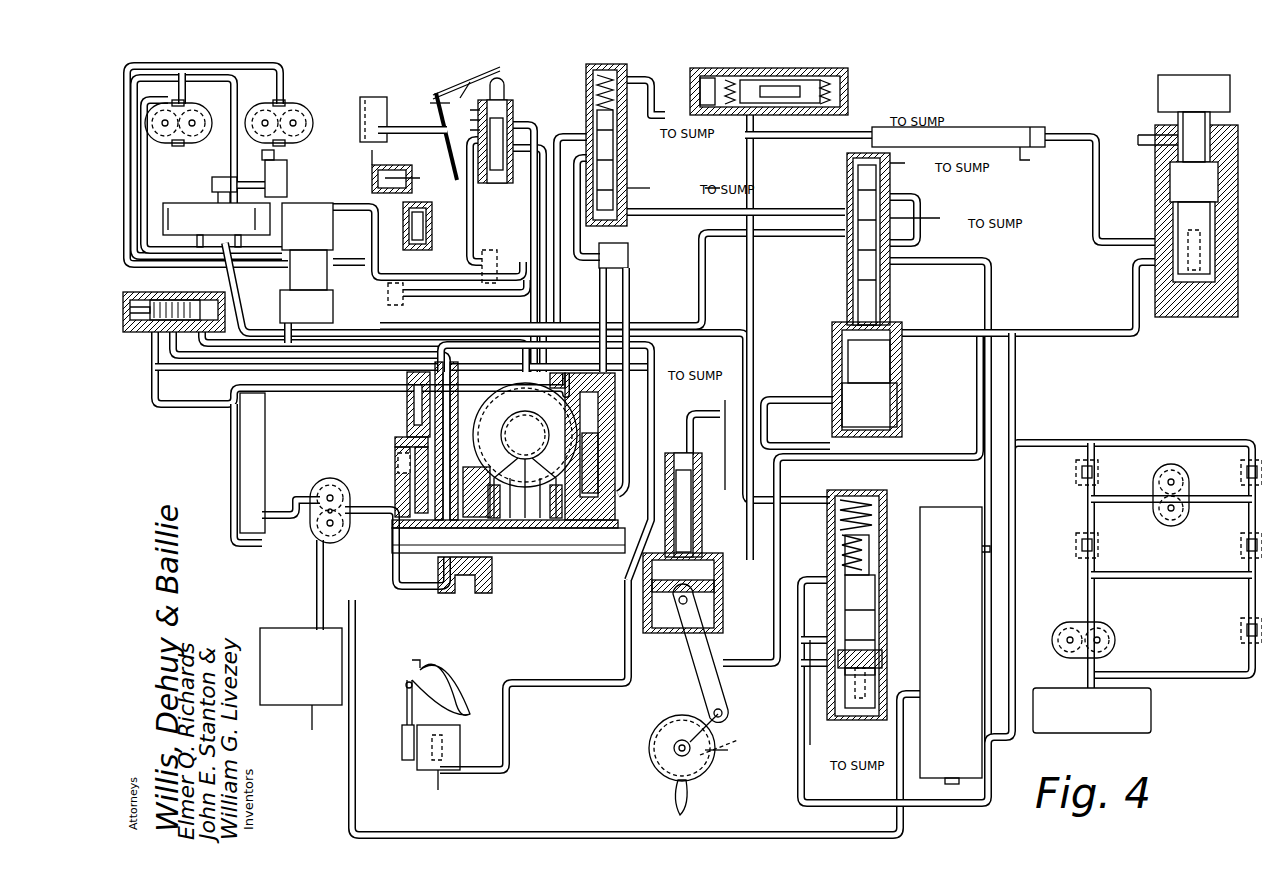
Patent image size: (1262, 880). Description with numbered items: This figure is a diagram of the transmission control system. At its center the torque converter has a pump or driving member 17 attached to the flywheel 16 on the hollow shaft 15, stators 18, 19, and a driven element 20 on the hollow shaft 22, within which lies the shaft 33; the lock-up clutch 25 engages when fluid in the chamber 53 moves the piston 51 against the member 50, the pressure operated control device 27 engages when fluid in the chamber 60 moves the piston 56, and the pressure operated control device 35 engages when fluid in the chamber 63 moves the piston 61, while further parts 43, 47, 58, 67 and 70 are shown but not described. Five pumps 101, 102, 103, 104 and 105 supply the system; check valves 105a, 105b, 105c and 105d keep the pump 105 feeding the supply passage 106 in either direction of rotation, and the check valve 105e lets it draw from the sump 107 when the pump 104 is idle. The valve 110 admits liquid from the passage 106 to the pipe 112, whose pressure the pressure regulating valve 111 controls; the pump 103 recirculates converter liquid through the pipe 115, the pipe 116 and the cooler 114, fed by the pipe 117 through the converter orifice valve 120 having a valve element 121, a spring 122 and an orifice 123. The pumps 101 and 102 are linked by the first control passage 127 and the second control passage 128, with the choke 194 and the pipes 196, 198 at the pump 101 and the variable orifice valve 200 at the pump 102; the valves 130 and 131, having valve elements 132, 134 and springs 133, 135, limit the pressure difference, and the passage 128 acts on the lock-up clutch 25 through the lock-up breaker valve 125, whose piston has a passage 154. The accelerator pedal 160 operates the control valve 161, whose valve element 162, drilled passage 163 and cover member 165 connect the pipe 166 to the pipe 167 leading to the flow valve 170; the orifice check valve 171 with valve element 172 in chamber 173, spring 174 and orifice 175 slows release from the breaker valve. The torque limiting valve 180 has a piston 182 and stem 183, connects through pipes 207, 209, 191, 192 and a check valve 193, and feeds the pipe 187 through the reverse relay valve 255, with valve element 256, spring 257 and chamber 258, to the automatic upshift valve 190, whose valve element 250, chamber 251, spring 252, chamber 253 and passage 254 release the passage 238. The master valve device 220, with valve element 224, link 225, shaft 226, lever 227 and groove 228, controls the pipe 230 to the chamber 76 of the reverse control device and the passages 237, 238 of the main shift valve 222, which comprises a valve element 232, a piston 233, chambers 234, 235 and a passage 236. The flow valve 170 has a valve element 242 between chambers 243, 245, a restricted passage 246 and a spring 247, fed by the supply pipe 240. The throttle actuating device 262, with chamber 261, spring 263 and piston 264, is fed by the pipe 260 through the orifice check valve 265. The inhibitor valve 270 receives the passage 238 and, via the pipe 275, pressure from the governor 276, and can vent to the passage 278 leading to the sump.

The hollow shaft 15 is at (651, 500).
The flywheel 16 is at (615, 376).
The pump or driving member 17 is at (518, 383).
The stator 18 is at (506, 476).
The stator 19 is at (543, 476).
The output or driven element 20 is at (525, 435).
The hollow shaft 22 is at (600, 553).
The lock-up clutch 25 is at (582, 445).
The pressure operated control device 27 is at (410, 435).
The shaft 33 is at (515, 550).
The pressure operated control device 35 is at (410, 372).
The cam lever 43 is at (440, 690).
The link 47 is at (470, 718).
The member 50 is at (550, 378).
The piston 51 is at (615, 395).
The chamber 53 is at (615, 410).
The piston 56 is at (472, 425).
The ring 58 is at (465, 412).
The chamber 60 is at (463, 468).
The piston 61 is at (458, 375).
The chamber 63 is at (458, 395).
The rod 67 is at (405, 700).
The servo 70 is at (402, 745).
The chamber 76 is at (455, 750).
The pump 101 is at (190, 130).
The pump 102 is at (290, 103).
The pump 103 is at (330, 495).
The pump 104 is at (1115, 636).
The pump 105 is at (1183, 478).
The check valve 105a is at (1065, 475).
The check valve 105b is at (1066, 547).
The check valve 105c is at (1230, 476).
The check valve 105d is at (1227, 546).
The check valve 105e is at (1226, 630).
The supply passage 106 is at (1080, 325).
The sump 107 is at (1140, 712).
The valve 110 is at (935, 505).
The pressure regulating valve 111 is at (300, 628).
The pipe 112 is at (350, 802).
The cooler 114 is at (262, 440).
The pipe 115 is at (348, 505).
The pipe 116 is at (295, 512).
The pipe 117 is at (180, 404).
The converter orifice valve 120 is at (140, 335).
The valve element 121 is at (202, 335).
The spring 122 is at (175, 335).
The orifice 123 is at (150, 296).
The lock-up breaker valve 125 is at (333, 210).
The first control passage 127 is at (283, 72).
The second control passage 128 is at (470, 290).
The valve 130 is at (405, 298).
The valve 131 is at (492, 252).
The valve element 132 is at (359, 293).
The spring 133 is at (359, 307).
The valve element 134 is at (497, 265).
The spring 135 is at (504, 210).
The centrally located passage 154 is at (485, 164).
The accelerator pedal 160 is at (440, 86).
The control valve 161 is at (513, 110).
The valve element 162 is at (504, 88).
The drilled passage 163 is at (495, 180).
The cover member 165 is at (480, 78).
The pipe 166 is at (470, 190).
The pipe 167 is at (534, 140).
The flow valve 170 is at (887, 492).
The orifice check valve 171 is at (423, 230).
The valve element 172 is at (432, 215).
The chamber 173 is at (400, 250).
The spring 174 is at (403, 225).
The orifice 175 is at (425, 245).
The torque limiting valve 180 is at (345, 232).
The piston 182 is at (246, 278).
The stem 183 is at (582, 222).
The pipe 187 is at (262, 272).
The automatic upshift valve 190 is at (855, 90).
The pipe 191 is at (197, 243).
The pipe 192 is at (241, 243).
The check valve 193 is at (228, 192).
The choke or restriction 194 is at (178, 90).
The pipe 196 is at (175, 230).
The pipe 198 is at (236, 84).
The variable orifice valve 200 is at (287, 175).
The pipe 207 is at (274, 152).
The pipe 209 is at (250, 182).
The master valve device 220 is at (648, 635).
The main shift valve 222 is at (890, 295).
The valve element 224 is at (702, 520).
The link 225 is at (700, 660).
The shaft 226 is at (660, 735).
The arm or lever 227 is at (675, 808).
The groove 228 is at (735, 740).
The pipe 230 is at (645, 285).
The valve element 232 is at (856, 290).
The piston 233 is at (840, 345).
The chamber 234 is at (890, 312).
The chamber 235 is at (885, 425).
The passage 236 is at (852, 305).
The passage 237 is at (832, 398).
The passage 238 is at (830, 132).
The supply pipe 240 is at (988, 300).
The valve element 242 is at (878, 565).
The chamber 243 is at (885, 668).
The chamber 245 is at (878, 520).
The passage 246 is at (855, 715).
The spring 247 is at (855, 500).
The valve element 250 is at (725, 118).
The chamber 251 is at (700, 85).
The coil spring 252 is at (830, 72).
The chamber 253 is at (840, 95).
The passage 254 is at (770, 107).
The reverse relay valve 255 is at (627, 150).
The valve element 256 is at (597, 95).
The coil spring 257 is at (651, 90).
The chamber 258 is at (627, 208).
The pipe 260 is at (376, 225).
The chamber 261 is at (372, 160).
The throttle actuating device 262 is at (410, 185).
The coil spring 263 is at (410, 170).
The piston 264 is at (390, 165).
The orifice check valve 265 is at (600, 250).
The inhibitor valve 270 is at (955, 127).
The pipe 275 is at (1090, 137).
The governor 276 is at (1195, 317).
The passage 278 is at (1030, 160).